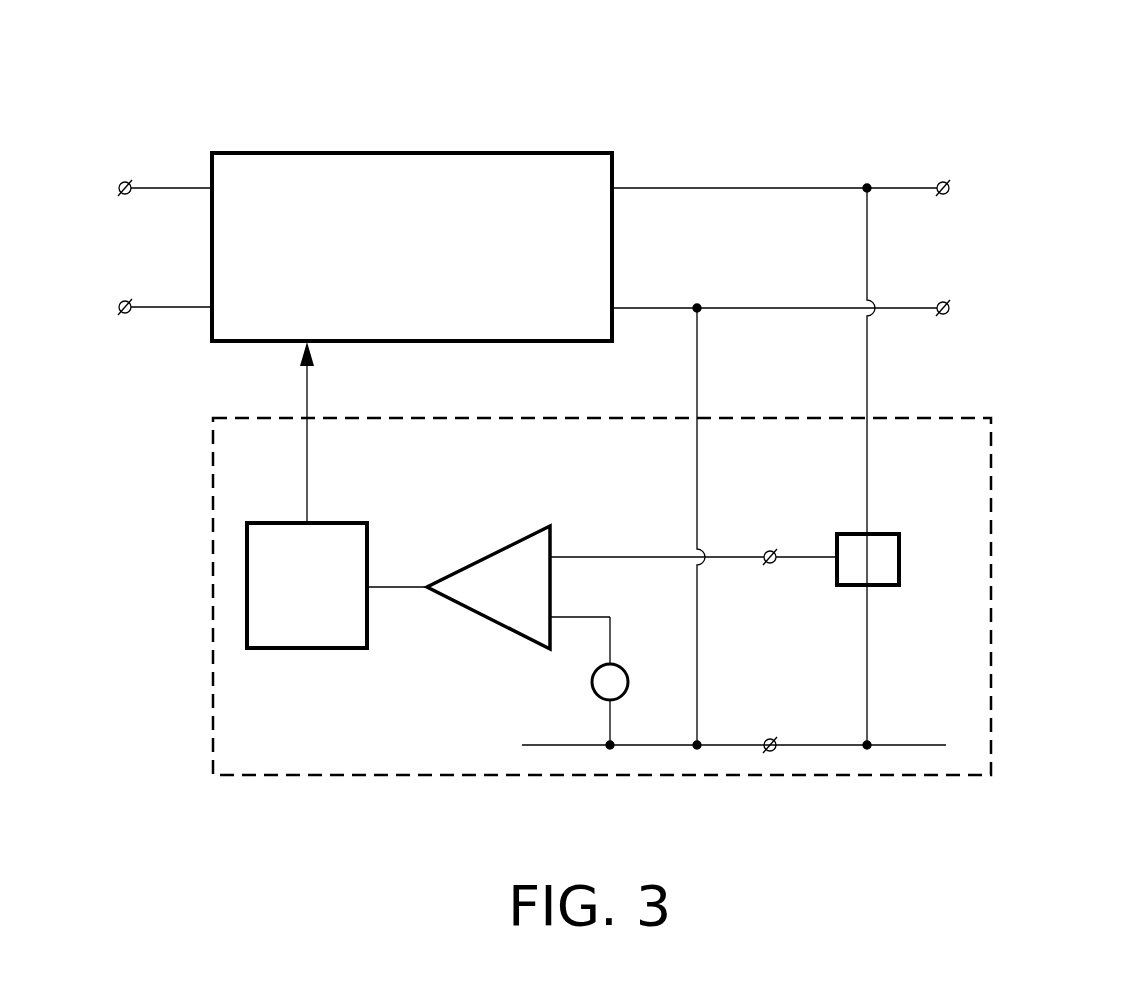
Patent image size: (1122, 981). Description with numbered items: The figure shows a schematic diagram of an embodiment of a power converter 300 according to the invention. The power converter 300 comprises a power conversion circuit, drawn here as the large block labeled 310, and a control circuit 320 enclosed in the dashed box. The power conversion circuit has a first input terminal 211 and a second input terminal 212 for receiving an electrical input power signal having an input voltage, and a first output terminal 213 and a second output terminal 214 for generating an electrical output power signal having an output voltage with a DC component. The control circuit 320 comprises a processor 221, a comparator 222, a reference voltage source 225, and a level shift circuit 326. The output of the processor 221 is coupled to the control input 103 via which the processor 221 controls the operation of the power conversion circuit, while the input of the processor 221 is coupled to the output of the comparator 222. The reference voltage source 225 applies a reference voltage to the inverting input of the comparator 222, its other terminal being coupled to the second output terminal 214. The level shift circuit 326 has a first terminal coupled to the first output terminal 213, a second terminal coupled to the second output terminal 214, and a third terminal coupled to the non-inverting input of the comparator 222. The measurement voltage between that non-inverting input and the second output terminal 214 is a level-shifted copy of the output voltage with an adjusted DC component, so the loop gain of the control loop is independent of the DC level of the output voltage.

The power converter 300 is at (662, 102).
The power converter 310 is at (612, 247).
The first input terminal 211 is at (172, 186).
The second input terminal 212 is at (172, 309).
The first output terminal 213 is at (712, 186).
The second output terminal 214 is at (660, 310).
The control circuit 320 is at (991, 603).
The control input 103 is at (310, 388).
The processor 221 is at (307, 650).
The comparator 222 is at (490, 552).
The reference voltage source 225 is at (592, 683).
The level shift circuit 326 is at (900, 563).